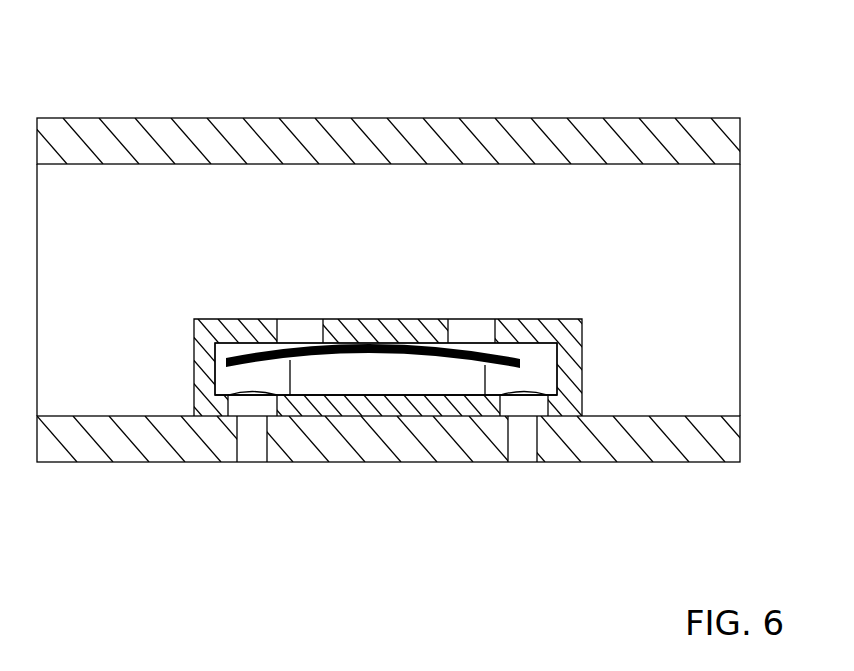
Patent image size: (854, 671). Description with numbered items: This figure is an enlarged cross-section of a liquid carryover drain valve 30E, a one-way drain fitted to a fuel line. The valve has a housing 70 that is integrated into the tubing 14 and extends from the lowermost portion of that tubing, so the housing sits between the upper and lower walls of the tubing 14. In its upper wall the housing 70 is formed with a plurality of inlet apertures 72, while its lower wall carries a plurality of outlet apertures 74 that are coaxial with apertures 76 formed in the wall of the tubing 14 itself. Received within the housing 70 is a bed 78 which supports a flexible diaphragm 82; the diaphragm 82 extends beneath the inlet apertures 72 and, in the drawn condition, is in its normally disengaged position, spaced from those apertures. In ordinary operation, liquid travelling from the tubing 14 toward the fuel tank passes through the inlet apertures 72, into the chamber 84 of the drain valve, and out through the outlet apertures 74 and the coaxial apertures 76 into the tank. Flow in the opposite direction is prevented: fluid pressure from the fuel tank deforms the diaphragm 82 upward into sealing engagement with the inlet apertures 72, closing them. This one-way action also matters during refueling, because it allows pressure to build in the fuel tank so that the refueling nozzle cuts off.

The tubing 14 is at (380, 118).
The liquid carryover drain valve 30E is at (575, 300).
The housing 70 is at (205, 373).
The inlet apertures 72 is at (467, 335).
The outlet apertures 74 is at (247, 390).
The apertures 76 is at (250, 447).
The bed 78 is at (397, 366).
The flexible diaphragm 82 is at (514, 356).
The chamber 84 is at (538, 368).